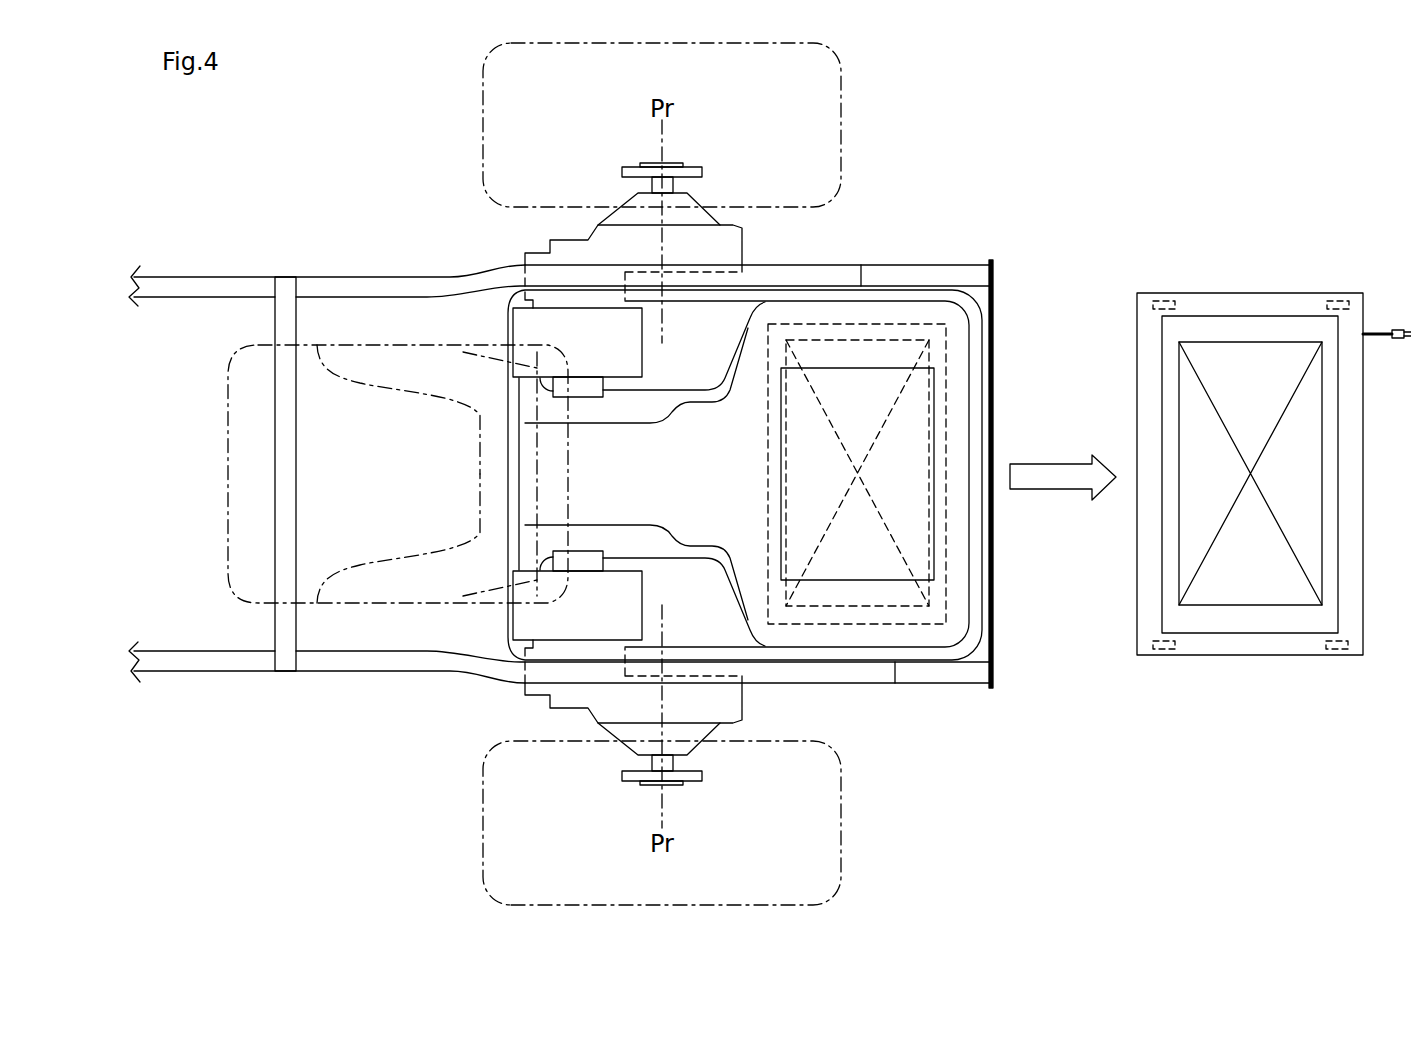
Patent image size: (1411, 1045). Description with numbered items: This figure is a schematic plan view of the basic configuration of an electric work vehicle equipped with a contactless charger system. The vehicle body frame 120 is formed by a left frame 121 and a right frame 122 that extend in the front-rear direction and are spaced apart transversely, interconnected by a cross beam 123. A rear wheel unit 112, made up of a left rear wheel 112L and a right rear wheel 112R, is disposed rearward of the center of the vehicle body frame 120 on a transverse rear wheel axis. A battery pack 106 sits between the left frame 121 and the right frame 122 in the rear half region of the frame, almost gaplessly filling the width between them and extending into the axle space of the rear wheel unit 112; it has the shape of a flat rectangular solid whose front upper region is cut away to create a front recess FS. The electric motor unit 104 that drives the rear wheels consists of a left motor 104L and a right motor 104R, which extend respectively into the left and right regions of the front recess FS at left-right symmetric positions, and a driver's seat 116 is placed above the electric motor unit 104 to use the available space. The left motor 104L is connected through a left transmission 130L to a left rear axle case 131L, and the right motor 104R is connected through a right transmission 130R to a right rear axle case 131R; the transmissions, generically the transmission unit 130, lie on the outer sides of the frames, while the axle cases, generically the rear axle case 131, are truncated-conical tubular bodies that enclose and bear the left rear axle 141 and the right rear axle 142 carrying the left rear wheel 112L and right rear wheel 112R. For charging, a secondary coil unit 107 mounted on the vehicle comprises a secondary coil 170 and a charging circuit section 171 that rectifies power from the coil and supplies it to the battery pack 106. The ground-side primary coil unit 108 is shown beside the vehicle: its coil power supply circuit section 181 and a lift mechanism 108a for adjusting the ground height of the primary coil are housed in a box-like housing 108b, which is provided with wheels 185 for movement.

The electric motor unit 104 is at (476, 474).
The right motor 104R is at (516, 328).
The left motor 104L is at (522, 613).
The battery pack 106 is at (865, 647).
The secondary coil unit 107 is at (948, 396).
The primary coil unit 108 is at (1217, 424).
The lift mechanism 108a is at (1290, 627).
The housing 108b is at (1145, 597).
The rear wheel unit 112 is at (558, 474).
The right rear wheel 112R is at (480, 116).
The left rear wheel 112L is at (480, 832).
The driver's seat 116 is at (227, 438).
The vehicle body frame 120 is at (561, 461).
The left frame 121 is at (203, 665).
The right frame 122 is at (165, 280).
The cross beam 123 is at (280, 500).
The transmission unit 130 is at (558, 475).
The right transmission 130R is at (588, 240).
The left transmission 130L is at (552, 703).
The rear axle case 131 is at (717, 467).
The right rear axle case 131R is at (687, 203).
The left rear axle case 131L is at (687, 745).
The left rear axle 141 is at (652, 766).
The right rear axle 142 is at (654, 186).
The secondary coil 170 is at (922, 355).
The charging circuit section 171 is at (919, 527).
The coil power supply circuit section 181 is at (1233, 597).
The wheels 185 is at (1163, 299).
The front recess FS is at (647, 397).